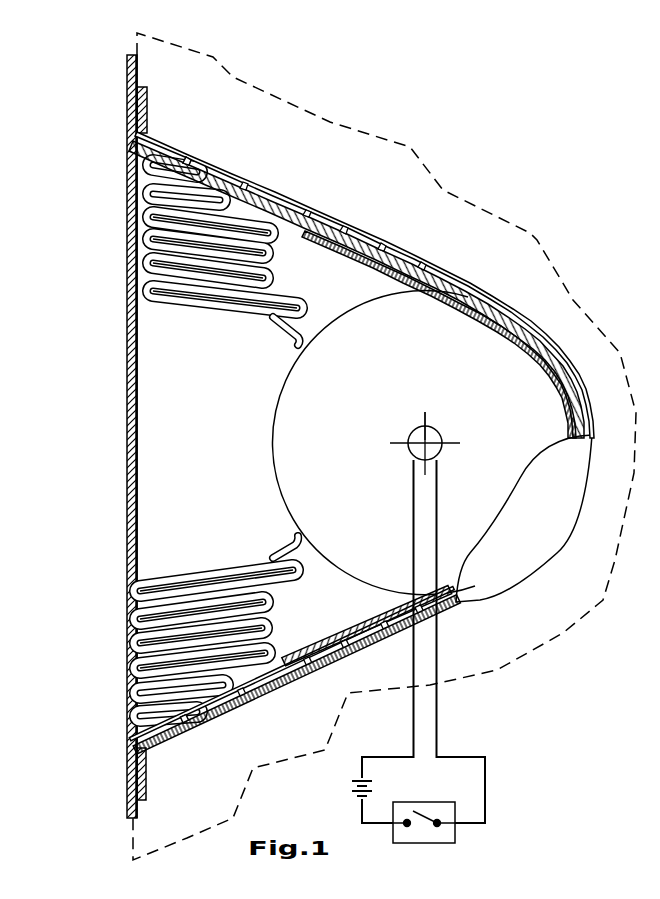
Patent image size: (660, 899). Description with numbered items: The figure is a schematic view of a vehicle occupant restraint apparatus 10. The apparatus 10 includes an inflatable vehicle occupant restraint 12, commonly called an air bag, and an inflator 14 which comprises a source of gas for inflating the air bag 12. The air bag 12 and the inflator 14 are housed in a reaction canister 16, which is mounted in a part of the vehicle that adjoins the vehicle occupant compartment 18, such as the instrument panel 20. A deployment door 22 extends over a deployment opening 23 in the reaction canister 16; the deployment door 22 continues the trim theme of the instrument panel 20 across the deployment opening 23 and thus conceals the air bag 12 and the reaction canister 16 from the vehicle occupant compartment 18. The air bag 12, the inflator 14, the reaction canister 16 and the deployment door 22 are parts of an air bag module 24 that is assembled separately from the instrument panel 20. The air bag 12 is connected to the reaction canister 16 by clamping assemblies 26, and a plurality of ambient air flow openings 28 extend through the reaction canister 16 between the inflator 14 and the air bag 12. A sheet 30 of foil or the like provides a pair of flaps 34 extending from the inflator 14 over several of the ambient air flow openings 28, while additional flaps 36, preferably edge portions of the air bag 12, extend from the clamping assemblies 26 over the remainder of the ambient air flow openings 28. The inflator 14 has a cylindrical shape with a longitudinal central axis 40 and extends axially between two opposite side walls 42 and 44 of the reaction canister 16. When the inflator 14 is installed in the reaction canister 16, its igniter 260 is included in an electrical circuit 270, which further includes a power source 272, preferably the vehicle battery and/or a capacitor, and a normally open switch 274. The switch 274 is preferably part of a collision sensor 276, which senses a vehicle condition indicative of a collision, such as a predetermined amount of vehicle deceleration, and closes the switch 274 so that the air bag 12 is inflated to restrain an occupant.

The vehicle occupant restraint apparatus 10 is at (96, 105).
The inflatable vehicle occupant restraint 12 is at (148, 205).
The inflator 14 is at (275, 423).
The reaction canister 16 is at (477, 274).
The vehicle occupant compartment 18 is at (101, 362).
The instrument panel 20 is at (135, 44).
The deployment door 22 is at (128, 128).
The deployment opening 23 is at (118, 322).
The air bag module 24 is at (412, 222).
The clamping assemblies 26 is at (184, 145).
The ambient air flow openings 28 is at (352, 231).
The sheet 30 is at (378, 276).
The flaps 34 is at (298, 236).
The additional flaps 36 is at (245, 182).
The longitudinal central axis 40 is at (432, 434).
The side wall 42 is at (152, 490).
The side wall 44 is at (523, 494).
The igniter 260 is at (397, 436).
The electrical circuit 270 is at (457, 748).
The power source 272 is at (355, 781).
The normally open switch 274 is at (432, 812).
The collision sensor 276 is at (420, 845).